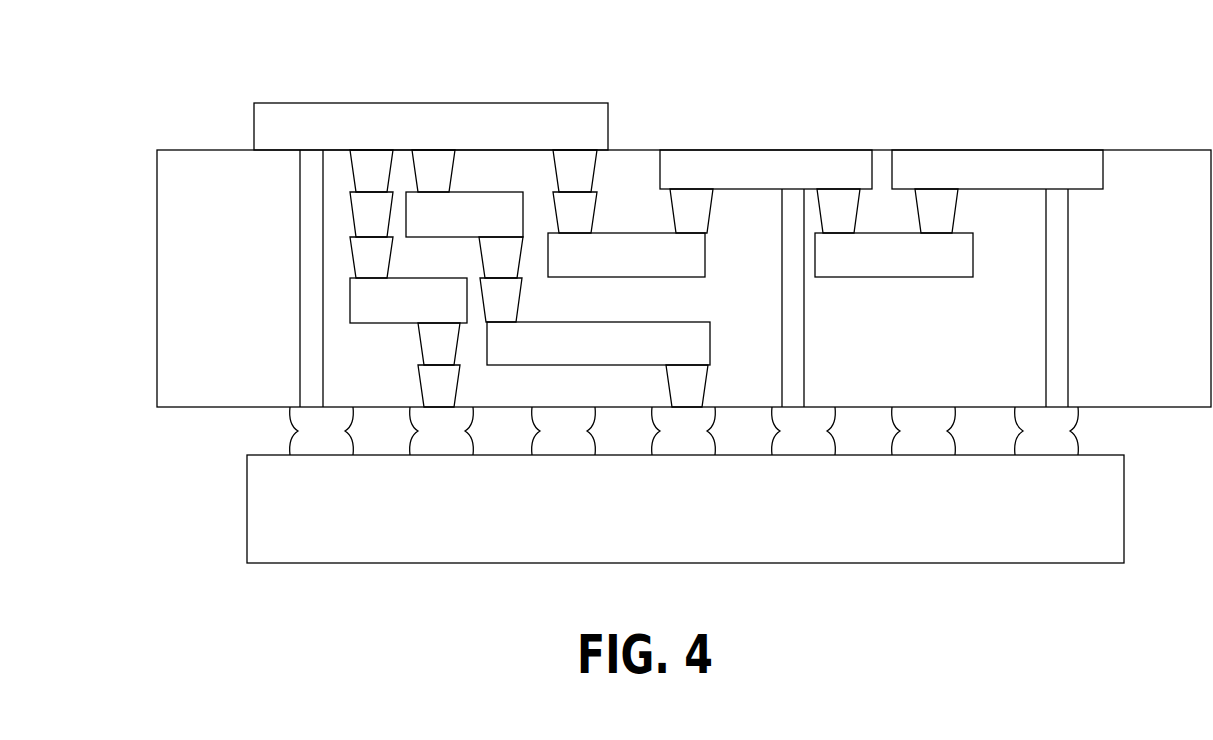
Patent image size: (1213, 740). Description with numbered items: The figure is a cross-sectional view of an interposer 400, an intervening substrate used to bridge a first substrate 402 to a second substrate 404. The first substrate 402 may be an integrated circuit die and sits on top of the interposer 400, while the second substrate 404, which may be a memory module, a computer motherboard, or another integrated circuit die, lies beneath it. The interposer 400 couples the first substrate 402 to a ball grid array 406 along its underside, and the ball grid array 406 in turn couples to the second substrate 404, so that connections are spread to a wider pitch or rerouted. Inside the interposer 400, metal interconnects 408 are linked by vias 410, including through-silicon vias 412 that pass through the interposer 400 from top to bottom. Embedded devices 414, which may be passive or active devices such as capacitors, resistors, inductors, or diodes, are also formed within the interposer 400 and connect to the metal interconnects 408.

The interposer 400 is at (1136, 323).
The first substrate 402 is at (412, 135).
The second substrate 404 is at (668, 520).
The ball grid array 406 is at (270, 425).
The metal interconnects 408 is at (440, 223).
The vias 410 is at (352, 215).
The through-silicon vias 412 is at (300, 188).
The embedded devices 414 is at (748, 180).